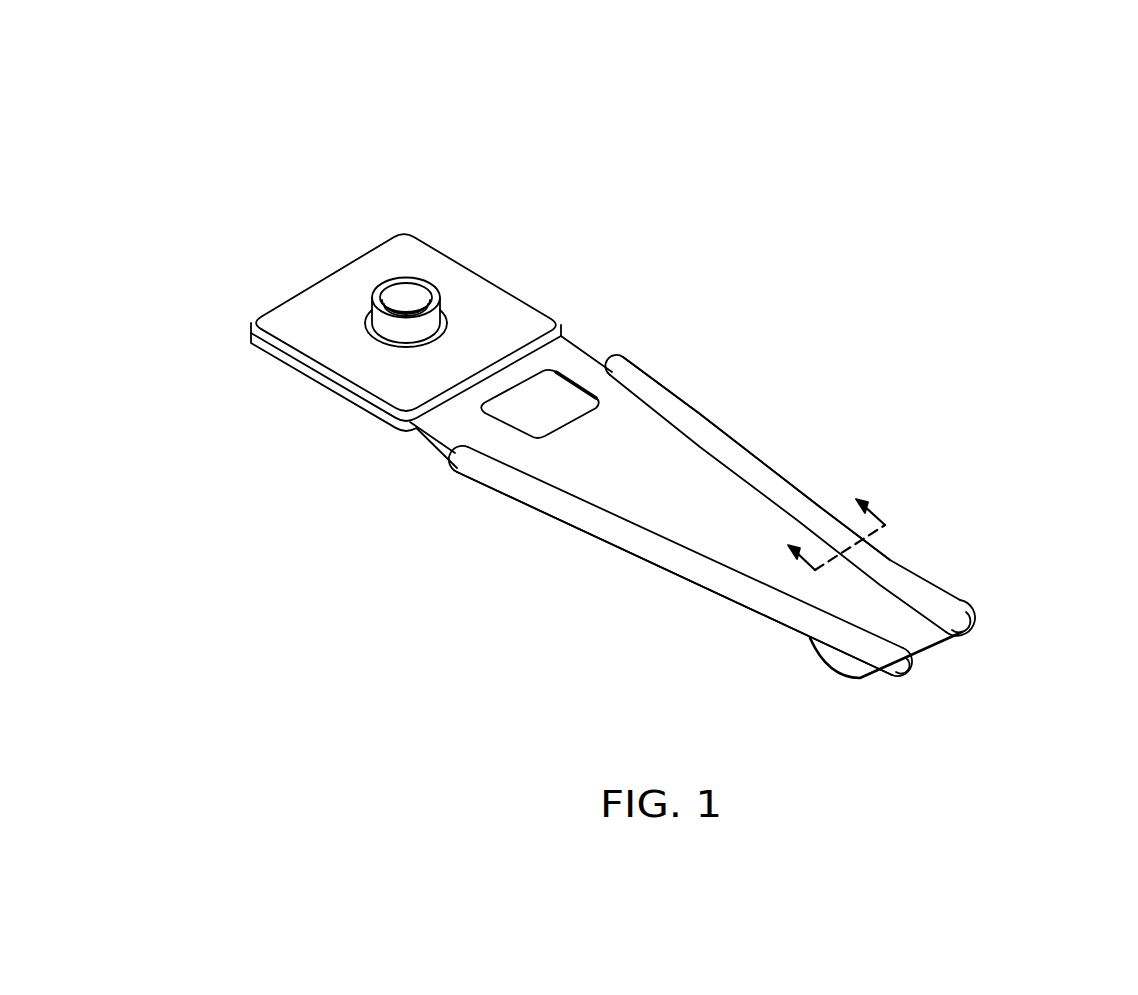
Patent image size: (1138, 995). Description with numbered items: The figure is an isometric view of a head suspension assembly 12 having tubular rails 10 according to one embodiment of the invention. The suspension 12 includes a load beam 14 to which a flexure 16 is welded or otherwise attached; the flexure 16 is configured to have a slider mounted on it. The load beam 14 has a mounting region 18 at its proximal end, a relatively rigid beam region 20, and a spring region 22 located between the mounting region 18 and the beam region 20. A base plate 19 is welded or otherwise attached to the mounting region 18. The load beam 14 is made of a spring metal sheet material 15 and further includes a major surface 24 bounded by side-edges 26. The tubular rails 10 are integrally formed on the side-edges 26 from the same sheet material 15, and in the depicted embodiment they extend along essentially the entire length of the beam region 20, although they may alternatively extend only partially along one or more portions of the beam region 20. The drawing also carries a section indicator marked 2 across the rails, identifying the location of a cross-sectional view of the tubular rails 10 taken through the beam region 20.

The head suspension assembly 12 is at (993, 323).
The base plate 19 is at (475, 288).
The mounting region 18 is at (332, 388).
The load beam 14 is at (640, 435).
The spring region 22 is at (577, 362).
The tubular rails 10 is at (748, 470).
The side-edges 26 is at (713, 420).
The major surface 24 is at (757, 520).
The beam region 20 is at (623, 493).
The spring metal sheet material 15 is at (757, 553).
The flexure 16 is at (957, 597).
The section line 2 is at (820, 521).